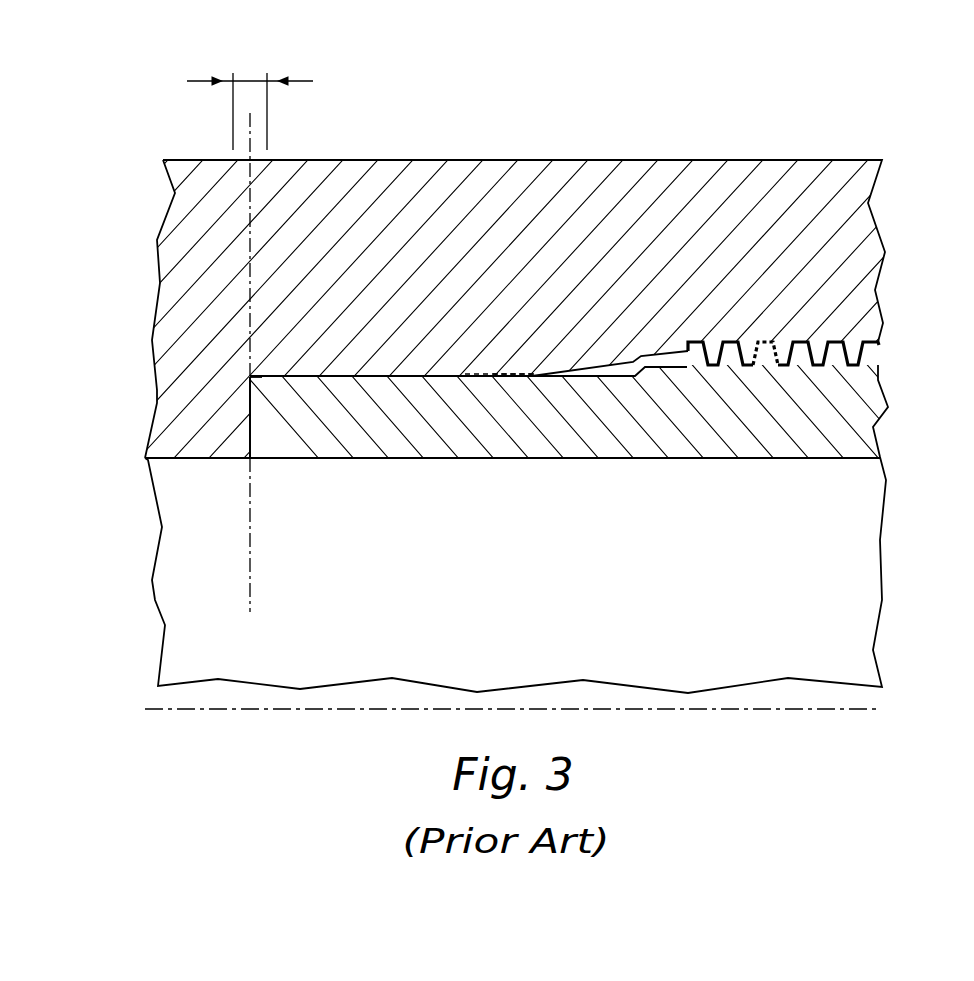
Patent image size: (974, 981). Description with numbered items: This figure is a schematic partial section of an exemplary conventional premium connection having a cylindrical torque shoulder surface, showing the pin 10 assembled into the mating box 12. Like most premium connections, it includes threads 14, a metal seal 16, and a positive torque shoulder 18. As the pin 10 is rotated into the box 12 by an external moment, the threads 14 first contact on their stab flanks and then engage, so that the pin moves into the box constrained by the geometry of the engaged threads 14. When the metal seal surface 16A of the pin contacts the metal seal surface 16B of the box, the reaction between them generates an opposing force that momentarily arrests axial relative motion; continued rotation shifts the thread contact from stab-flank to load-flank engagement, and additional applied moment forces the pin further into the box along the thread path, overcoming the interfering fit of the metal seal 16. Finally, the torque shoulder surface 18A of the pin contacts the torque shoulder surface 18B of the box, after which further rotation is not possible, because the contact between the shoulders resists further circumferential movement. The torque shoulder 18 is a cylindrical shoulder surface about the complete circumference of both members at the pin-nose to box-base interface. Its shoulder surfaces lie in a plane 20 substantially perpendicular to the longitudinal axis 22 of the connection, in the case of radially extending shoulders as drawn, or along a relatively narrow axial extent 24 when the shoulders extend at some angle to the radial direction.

The pin 10 is at (773, 438).
The box 12 is at (735, 170).
The threads 14 is at (788, 336).
The metal seal 16 is at (469, 302).
The metal seal surface of the first member 16A is at (493, 374).
The metal seal surface of the second member 16B is at (507, 376).
The positive torque shoulder 18 is at (238, 471).
The torque shoulder surface of the first member 18A is at (250, 440).
The torque shoulder surface of the second member 18B is at (258, 432).
The plane 20 is at (250, 212).
The longitudinal axis 22 is at (763, 709).
The axial extent 24 is at (250, 80).